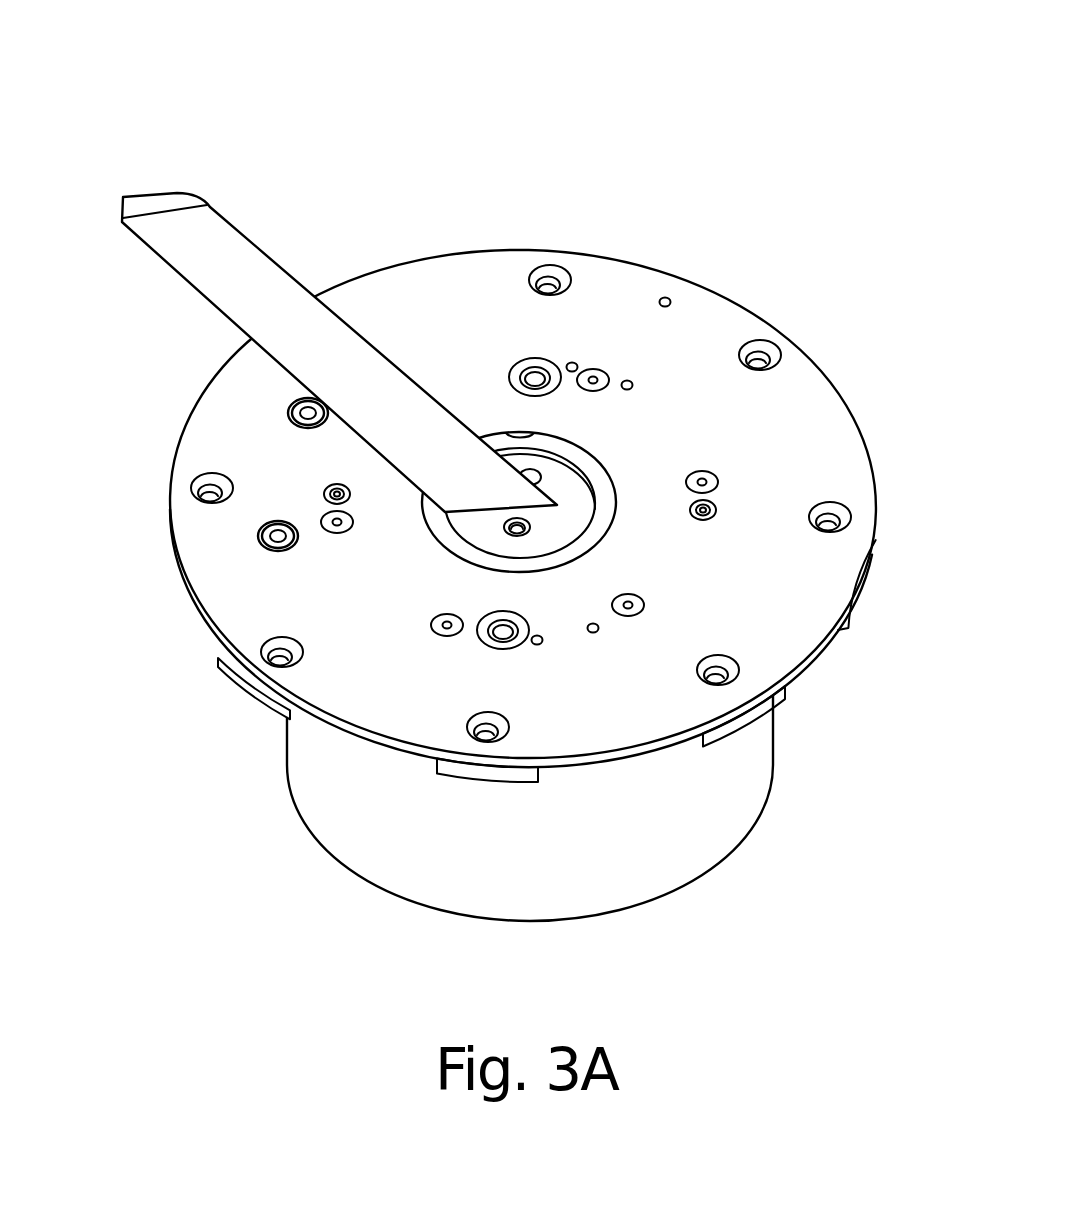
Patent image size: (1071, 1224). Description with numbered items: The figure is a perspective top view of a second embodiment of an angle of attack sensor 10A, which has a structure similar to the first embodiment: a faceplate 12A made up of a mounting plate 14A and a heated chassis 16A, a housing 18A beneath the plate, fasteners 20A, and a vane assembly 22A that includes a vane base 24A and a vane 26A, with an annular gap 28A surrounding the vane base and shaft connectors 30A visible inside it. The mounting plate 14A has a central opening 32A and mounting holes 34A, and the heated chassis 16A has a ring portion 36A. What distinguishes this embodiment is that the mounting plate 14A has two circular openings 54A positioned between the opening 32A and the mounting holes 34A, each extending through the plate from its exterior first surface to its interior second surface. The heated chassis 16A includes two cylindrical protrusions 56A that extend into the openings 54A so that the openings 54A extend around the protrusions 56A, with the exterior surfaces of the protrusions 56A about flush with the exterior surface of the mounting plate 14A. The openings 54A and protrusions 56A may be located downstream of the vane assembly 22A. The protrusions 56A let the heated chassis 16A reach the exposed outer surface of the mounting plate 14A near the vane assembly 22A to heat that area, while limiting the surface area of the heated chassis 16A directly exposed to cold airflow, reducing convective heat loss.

The angle of attack sensor 10A is at (489, 489).
The base plate assembly 12A is at (491, 580).
The mounting plate 14A is at (822, 410).
The heated chassis 16A is at (388, 509).
The base housing 18A is at (593, 878).
The aperture 20A is at (713, 482).
The vane assembly 22A is at (383, 483).
The recess floor 24A is at (480, 530).
The arm 26A is at (202, 252).
The recess wall 28A is at (597, 485).
The central aperture 30A is at (530, 527).
The opening 32A is at (500, 432).
The mounting holes 34A is at (768, 355).
The recess rim 36A is at (535, 563).
The openings 54A is at (300, 407).
The protrusions 56A is at (306, 412).